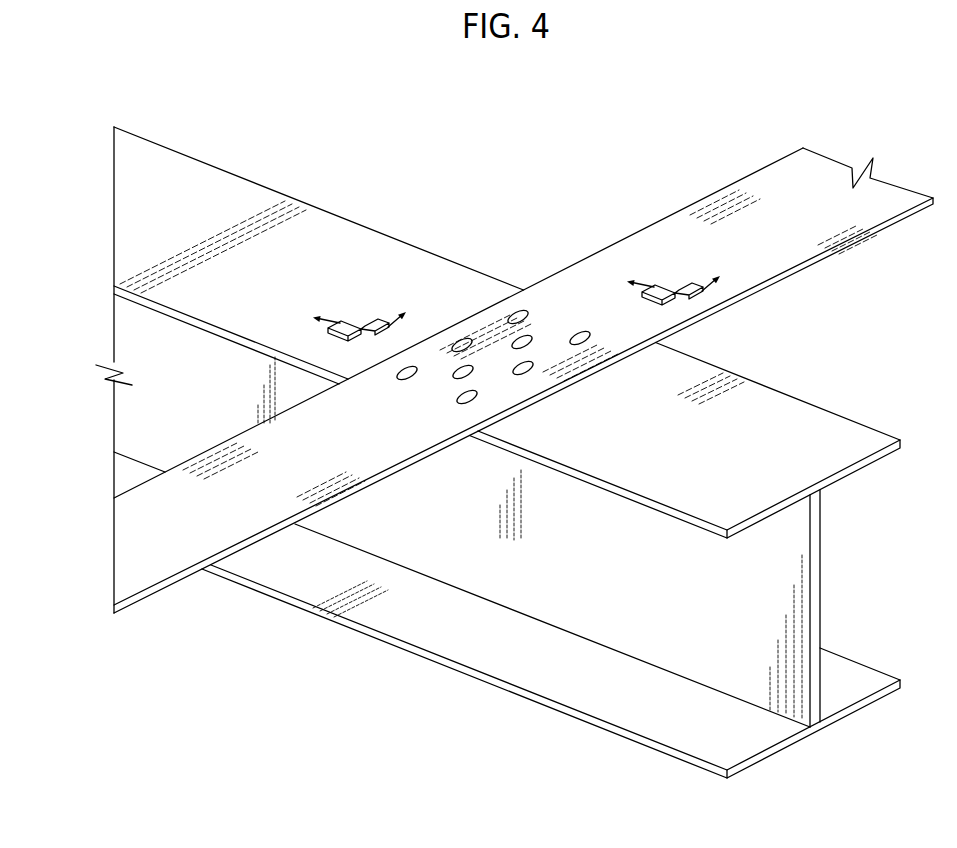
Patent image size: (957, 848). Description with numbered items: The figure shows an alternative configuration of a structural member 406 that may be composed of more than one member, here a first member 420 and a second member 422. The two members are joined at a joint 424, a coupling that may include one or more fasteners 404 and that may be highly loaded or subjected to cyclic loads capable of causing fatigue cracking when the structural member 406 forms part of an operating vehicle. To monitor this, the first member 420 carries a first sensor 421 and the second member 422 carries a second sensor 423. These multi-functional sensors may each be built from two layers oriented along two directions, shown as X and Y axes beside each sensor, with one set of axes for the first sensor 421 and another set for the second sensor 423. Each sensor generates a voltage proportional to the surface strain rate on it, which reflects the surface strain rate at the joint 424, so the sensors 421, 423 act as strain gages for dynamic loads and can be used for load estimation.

The fasteners 404 is at (407, 380).
The structural member 406 is at (112, 107).
The first member 420 is at (743, 192).
The first sensor 421 is at (663, 293).
The second member 422 is at (178, 290).
The second sensor 423 is at (355, 327).
The joint 424 is at (513, 255).